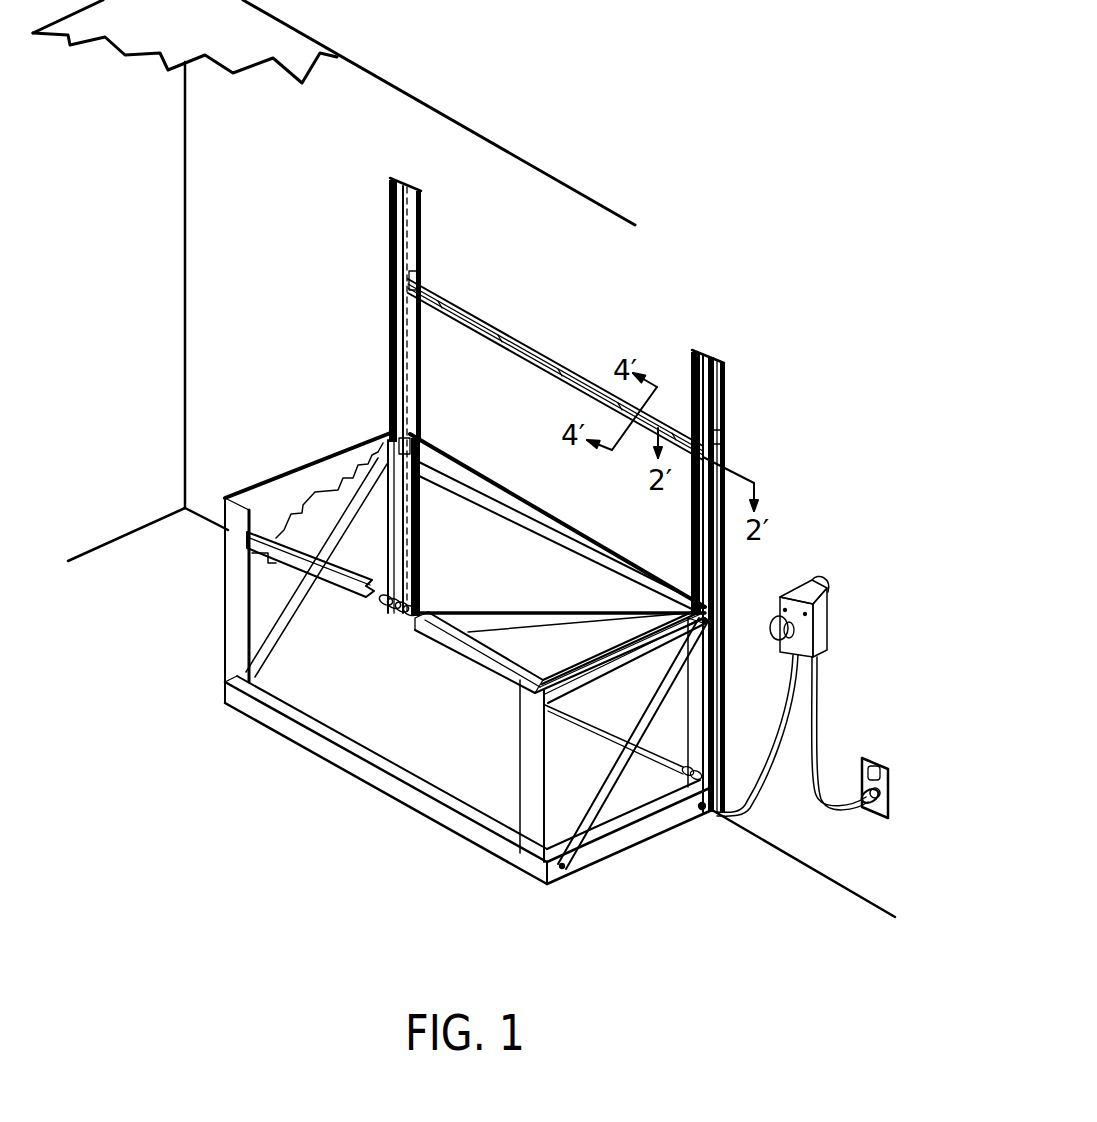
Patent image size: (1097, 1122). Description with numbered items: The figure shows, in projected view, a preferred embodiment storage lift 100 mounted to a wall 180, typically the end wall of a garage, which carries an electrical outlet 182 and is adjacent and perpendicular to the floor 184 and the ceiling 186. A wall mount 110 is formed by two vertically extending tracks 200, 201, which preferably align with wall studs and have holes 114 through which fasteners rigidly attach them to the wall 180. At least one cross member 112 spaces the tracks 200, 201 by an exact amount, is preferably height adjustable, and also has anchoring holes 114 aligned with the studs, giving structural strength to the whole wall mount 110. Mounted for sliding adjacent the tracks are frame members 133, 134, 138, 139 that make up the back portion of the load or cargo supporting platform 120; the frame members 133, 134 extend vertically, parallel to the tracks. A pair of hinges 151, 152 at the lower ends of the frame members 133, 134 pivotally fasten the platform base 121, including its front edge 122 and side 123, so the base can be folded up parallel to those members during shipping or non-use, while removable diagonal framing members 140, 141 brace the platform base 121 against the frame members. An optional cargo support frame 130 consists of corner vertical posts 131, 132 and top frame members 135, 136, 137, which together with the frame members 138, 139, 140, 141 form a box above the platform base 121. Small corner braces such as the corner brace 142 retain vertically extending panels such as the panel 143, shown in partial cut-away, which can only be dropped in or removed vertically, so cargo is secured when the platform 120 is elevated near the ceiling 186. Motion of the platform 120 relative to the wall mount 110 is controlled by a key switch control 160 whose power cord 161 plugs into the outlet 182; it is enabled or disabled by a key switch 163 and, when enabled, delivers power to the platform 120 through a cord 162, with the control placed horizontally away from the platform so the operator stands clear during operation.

The storage lift 100 is at (622, 270).
The wall mount 110 is at (503, 330).
The cross member 112 is at (560, 362).
The holes 114 is at (420, 277).
The load or cargo supporting platform 120 is at (300, 752).
The platform base 121 is at (390, 750).
The front edge 122 is at (440, 815).
The side 123 is at (637, 835).
The cargo support frame 130 is at (214, 601).
The corner vertical post 131 is at (232, 672).
The corner vertical post 132 is at (528, 735).
The frame member 133 is at (412, 441).
The frame member 134 is at (705, 698).
The top frame member 135 is at (313, 460).
The top frame member 136 is at (577, 684).
The top frame member 137 is at (285, 497).
The frame member 138 is at (545, 516).
The frame member 139 is at (587, 622).
The diagonal framing member 140 is at (282, 604).
The diagonal framing member 141 is at (590, 830).
The corner brace 142 is at (238, 487).
The panel 143 is at (348, 455).
The hinge 151 is at (428, 600).
The hinge 152 is at (686, 775).
The key switch control 160 is at (812, 583).
The power cord 161 is at (818, 690).
The cord 162 is at (760, 812).
The key switch 163 is at (828, 612).
The wall 180 is at (306, 205).
The electrical outlet 182 is at (865, 720).
The floor 184 is at (196, 561).
The ceiling 186 is at (292, 26).
The vertically extending track 200 is at (725, 365).
The vertically extending track 201 is at (422, 196).